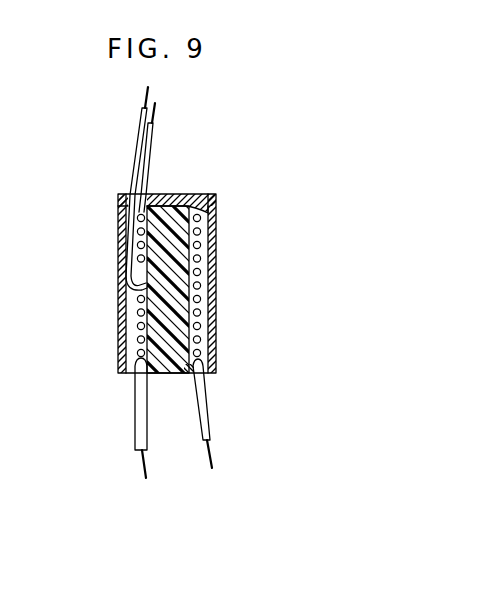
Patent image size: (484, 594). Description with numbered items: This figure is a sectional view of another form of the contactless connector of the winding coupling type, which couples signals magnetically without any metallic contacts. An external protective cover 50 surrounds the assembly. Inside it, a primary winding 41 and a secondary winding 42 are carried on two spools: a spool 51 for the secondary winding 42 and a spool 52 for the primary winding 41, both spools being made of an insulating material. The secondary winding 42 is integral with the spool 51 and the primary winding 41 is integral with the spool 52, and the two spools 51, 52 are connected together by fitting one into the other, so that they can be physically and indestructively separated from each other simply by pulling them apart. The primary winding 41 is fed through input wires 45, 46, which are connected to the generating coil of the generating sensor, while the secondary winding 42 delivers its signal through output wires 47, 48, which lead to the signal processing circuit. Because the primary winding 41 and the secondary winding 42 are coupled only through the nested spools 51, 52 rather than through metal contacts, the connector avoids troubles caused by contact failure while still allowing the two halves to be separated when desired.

The primary winding 41 is at (200, 331).
The secondary winding 42 is at (200, 229).
The input wire 45 is at (207, 401).
The input wire 46 is at (139, 410).
The output wire 47 is at (156, 135).
The output wire 48 is at (136, 149).
The external protective cover 50 is at (205, 200).
The spool for the secondary winding 51 is at (176, 200).
The spool for the primary winding 52 is at (190, 374).